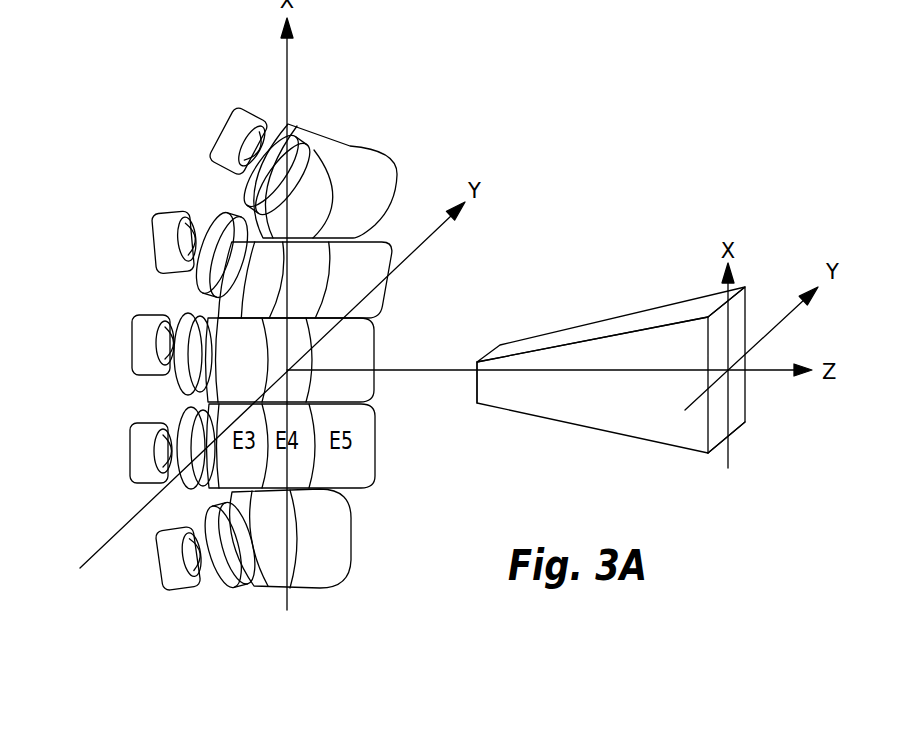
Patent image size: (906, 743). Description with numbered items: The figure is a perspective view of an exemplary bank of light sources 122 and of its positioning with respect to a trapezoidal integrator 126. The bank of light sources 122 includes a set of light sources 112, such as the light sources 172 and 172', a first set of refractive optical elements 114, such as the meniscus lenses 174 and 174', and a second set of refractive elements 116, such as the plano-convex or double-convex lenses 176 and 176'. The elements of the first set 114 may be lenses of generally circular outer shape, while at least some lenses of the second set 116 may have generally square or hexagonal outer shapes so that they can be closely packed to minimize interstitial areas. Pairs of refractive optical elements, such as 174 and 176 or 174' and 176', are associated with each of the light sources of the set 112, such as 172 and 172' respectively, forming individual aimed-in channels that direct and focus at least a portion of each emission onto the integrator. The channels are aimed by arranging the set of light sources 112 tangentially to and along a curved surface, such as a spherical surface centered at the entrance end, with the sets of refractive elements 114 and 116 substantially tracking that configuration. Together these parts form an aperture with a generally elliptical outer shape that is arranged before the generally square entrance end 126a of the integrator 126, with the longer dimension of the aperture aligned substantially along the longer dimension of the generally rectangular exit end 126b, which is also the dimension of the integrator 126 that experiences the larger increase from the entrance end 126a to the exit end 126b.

The set of light sources 112 is at (175, 614).
The first set of refractive optical elements 114 is at (261, 606).
The second set of refractive elements 116 is at (372, 566).
The bank of light sources 122 is at (72, 306).
The trapezoidal integrator 126 is at (637, 322).
The entrance end 126a is at (477, 362).
The exit end 126b is at (737, 427).
The light source 172 is at (224, 134).
The meniscus lens 174 is at (275, 147).
The plano-convex or double-convex lens 176 is at (325, 159).
The light source 172' is at (140, 241).
The meniscus lens 174' is at (187, 242).
The plano-convex or double-convex lens 176' is at (274, 236).